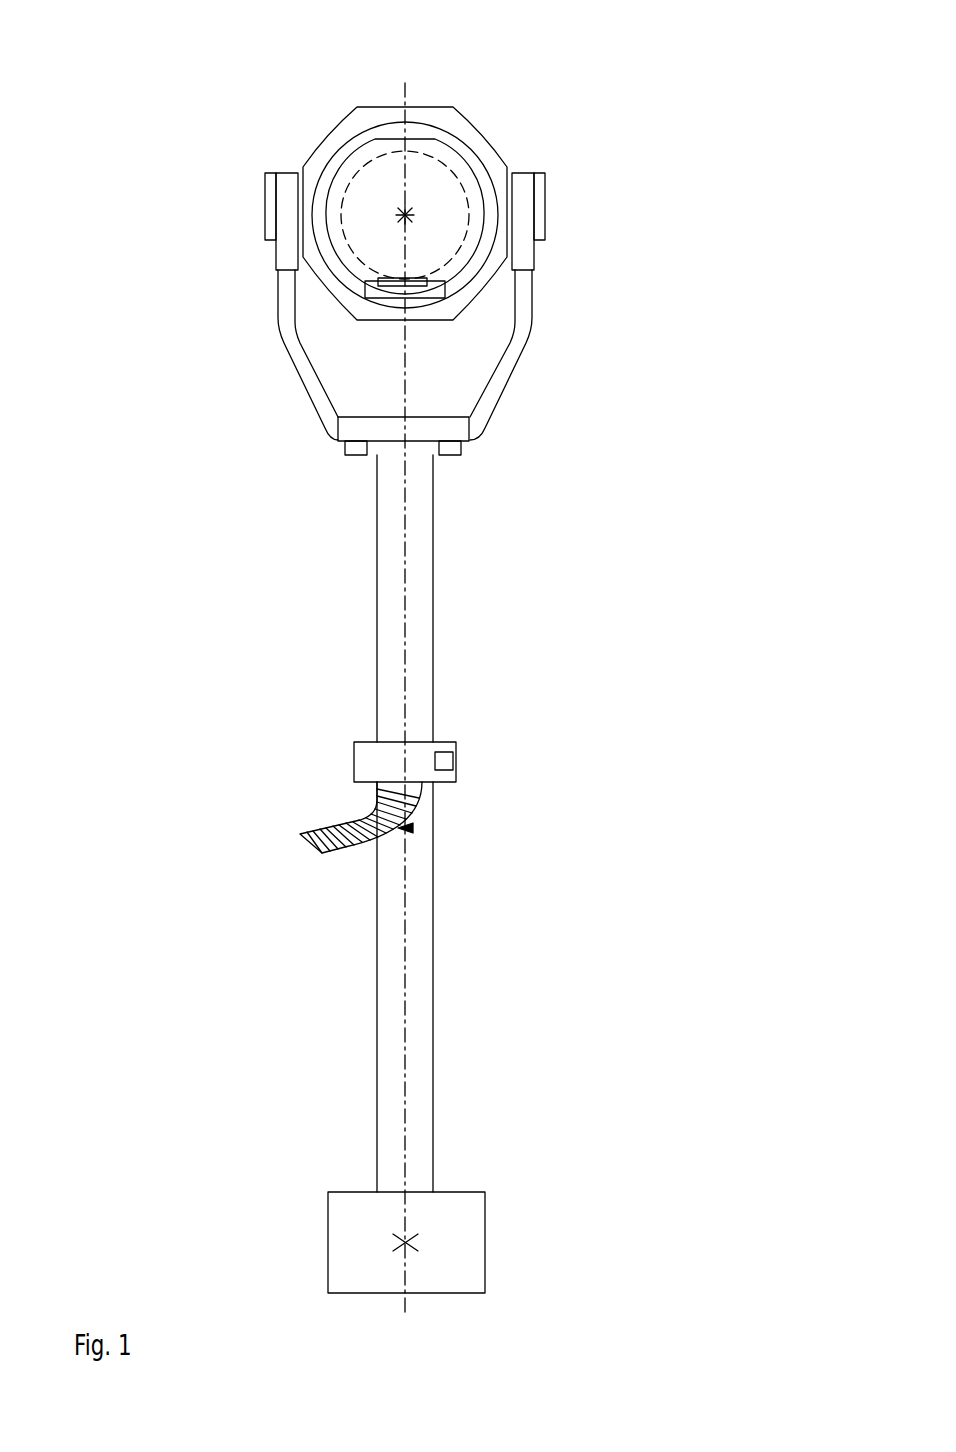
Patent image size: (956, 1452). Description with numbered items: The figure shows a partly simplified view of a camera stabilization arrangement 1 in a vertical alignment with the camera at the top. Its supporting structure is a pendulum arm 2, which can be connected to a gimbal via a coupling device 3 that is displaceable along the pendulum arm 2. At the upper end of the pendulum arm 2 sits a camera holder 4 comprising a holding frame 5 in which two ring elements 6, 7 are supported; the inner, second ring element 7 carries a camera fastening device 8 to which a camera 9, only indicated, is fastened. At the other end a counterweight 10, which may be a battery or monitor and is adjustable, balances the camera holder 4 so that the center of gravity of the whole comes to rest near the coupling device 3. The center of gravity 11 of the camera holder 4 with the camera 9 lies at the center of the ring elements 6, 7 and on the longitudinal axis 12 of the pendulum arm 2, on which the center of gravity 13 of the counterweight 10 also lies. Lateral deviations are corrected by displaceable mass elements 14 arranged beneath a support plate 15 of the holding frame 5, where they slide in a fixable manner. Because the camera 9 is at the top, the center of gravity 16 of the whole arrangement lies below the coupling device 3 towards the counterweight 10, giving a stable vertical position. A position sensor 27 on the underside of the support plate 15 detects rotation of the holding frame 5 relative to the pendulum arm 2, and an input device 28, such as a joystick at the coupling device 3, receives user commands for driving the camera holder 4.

The camera stabilization arrangement 1 is at (700, 272).
The pendulum arm 2 is at (376, 960).
The coupling device 3 is at (352, 762).
The camera holder 4 is at (222, 195).
The holding frame 5 is at (288, 347).
The ring element 6 is at (337, 132).
The second ring element 7 is at (388, 133).
The camera fastening device 8 is at (420, 288).
The camera 9 is at (423, 153).
The counterweight 10 is at (327, 1240).
The center of gravity 11 is at (412, 214).
The longitudinal axis 12 is at (405, 590).
The center of gravity 13 is at (413, 1242).
The displaceable mass elements 14 is at (345, 456).
The support plate 15 is at (372, 427).
The center of gravity 16 is at (413, 828).
The position sensor 27 is at (448, 449).
The input device 28 is at (451, 761).